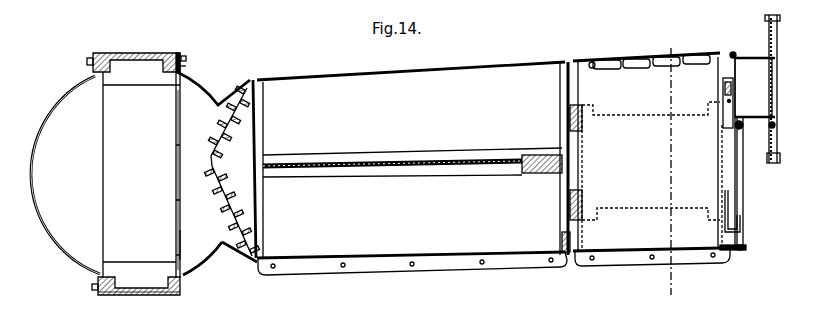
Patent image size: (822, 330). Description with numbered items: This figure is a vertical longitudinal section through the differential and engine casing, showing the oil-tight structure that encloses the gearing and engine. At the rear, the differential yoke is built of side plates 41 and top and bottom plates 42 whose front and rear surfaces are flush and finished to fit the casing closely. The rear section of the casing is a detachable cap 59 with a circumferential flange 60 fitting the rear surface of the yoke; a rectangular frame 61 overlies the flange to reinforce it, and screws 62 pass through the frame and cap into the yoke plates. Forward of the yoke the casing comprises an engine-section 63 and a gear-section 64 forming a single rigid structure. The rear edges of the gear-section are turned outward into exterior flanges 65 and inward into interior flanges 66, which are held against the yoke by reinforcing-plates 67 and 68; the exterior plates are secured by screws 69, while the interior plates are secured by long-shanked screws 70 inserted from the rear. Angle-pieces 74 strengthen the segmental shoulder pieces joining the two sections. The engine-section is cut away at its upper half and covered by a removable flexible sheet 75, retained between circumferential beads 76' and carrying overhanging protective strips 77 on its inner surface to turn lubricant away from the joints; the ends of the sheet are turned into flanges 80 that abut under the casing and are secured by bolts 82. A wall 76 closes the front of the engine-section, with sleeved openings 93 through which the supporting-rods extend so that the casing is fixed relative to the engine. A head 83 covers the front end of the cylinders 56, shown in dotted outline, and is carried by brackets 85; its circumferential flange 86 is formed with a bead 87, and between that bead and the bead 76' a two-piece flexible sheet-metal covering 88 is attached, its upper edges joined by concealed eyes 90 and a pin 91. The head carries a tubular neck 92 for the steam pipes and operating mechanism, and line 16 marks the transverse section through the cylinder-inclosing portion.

The section line 16 is at (669, 168).
The side plates 41 is at (139, 175).
The top and bottom plates 42 is at (128, 53).
The cylinders 56 is at (655, 188).
The detachable cap 59 is at (65, 175).
The circumferential flange 60 is at (103, 297).
The frame 61 is at (100, 293).
The screws 62 is at (93, 288).
The engine-section 63 is at (487, 169).
The gear-section 64 is at (217, 173).
The exterior flanges 65 is at (175, 53).
The interior flanges 66 is at (176, 118).
The exterior reinforcing-plates 67 is at (183, 68).
The interior reinforcing-plates 68 is at (182, 238).
The screws 69 is at (186, 58).
The long-shanked screws 70 is at (176, 205).
The angle-pieces 74 is at (221, 172).
The flexible sheet 75 is at (335, 76).
The wall 76 is at (543, 234).
The circumferential beads 76' is at (416, 145).
The overhanging protective strips 77 is at (470, 167).
The flanges 80 is at (447, 262).
The bolts 82 is at (483, 265).
The head 83 is at (742, 190).
The brackets 85 is at (722, 105).
The circumferential flange 86 is at (742, 251).
The bead 87 is at (733, 251).
The flexible sheet-metal covering 88 is at (651, 100).
The eyes 90 is at (614, 62).
The pin 91 is at (688, 58).
The tubular extension or neck 92 is at (755, 152).
The sleeved openings 93 is at (582, 200).